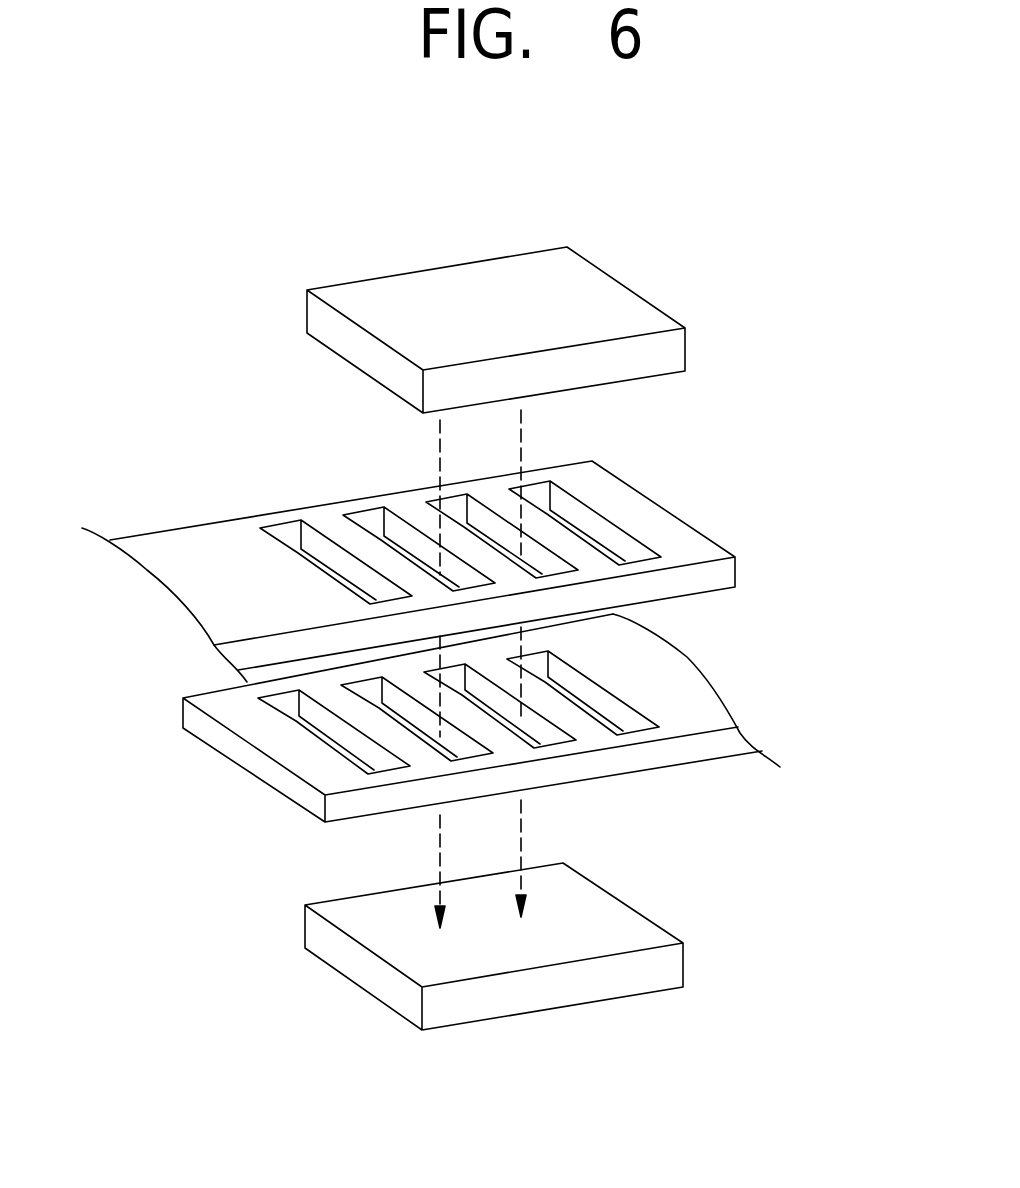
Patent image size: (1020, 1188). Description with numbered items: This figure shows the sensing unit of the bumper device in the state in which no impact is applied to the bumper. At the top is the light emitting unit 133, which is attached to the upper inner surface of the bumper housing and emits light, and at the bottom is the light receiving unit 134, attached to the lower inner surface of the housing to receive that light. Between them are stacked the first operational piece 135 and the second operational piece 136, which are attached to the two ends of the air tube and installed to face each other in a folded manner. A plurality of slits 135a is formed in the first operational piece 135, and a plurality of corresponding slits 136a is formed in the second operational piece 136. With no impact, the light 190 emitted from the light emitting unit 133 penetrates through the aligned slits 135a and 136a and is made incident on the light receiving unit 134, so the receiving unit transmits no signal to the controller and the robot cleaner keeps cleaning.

The light emitting unit 133 is at (618, 300).
The light receiving unit 134 is at (588, 929).
The first operational piece 135 is at (668, 538).
The slits 135a is at (577, 513).
The second operational piece 136 is at (677, 697).
The slits 136a is at (288, 717).
The light 190 is at (438, 860).